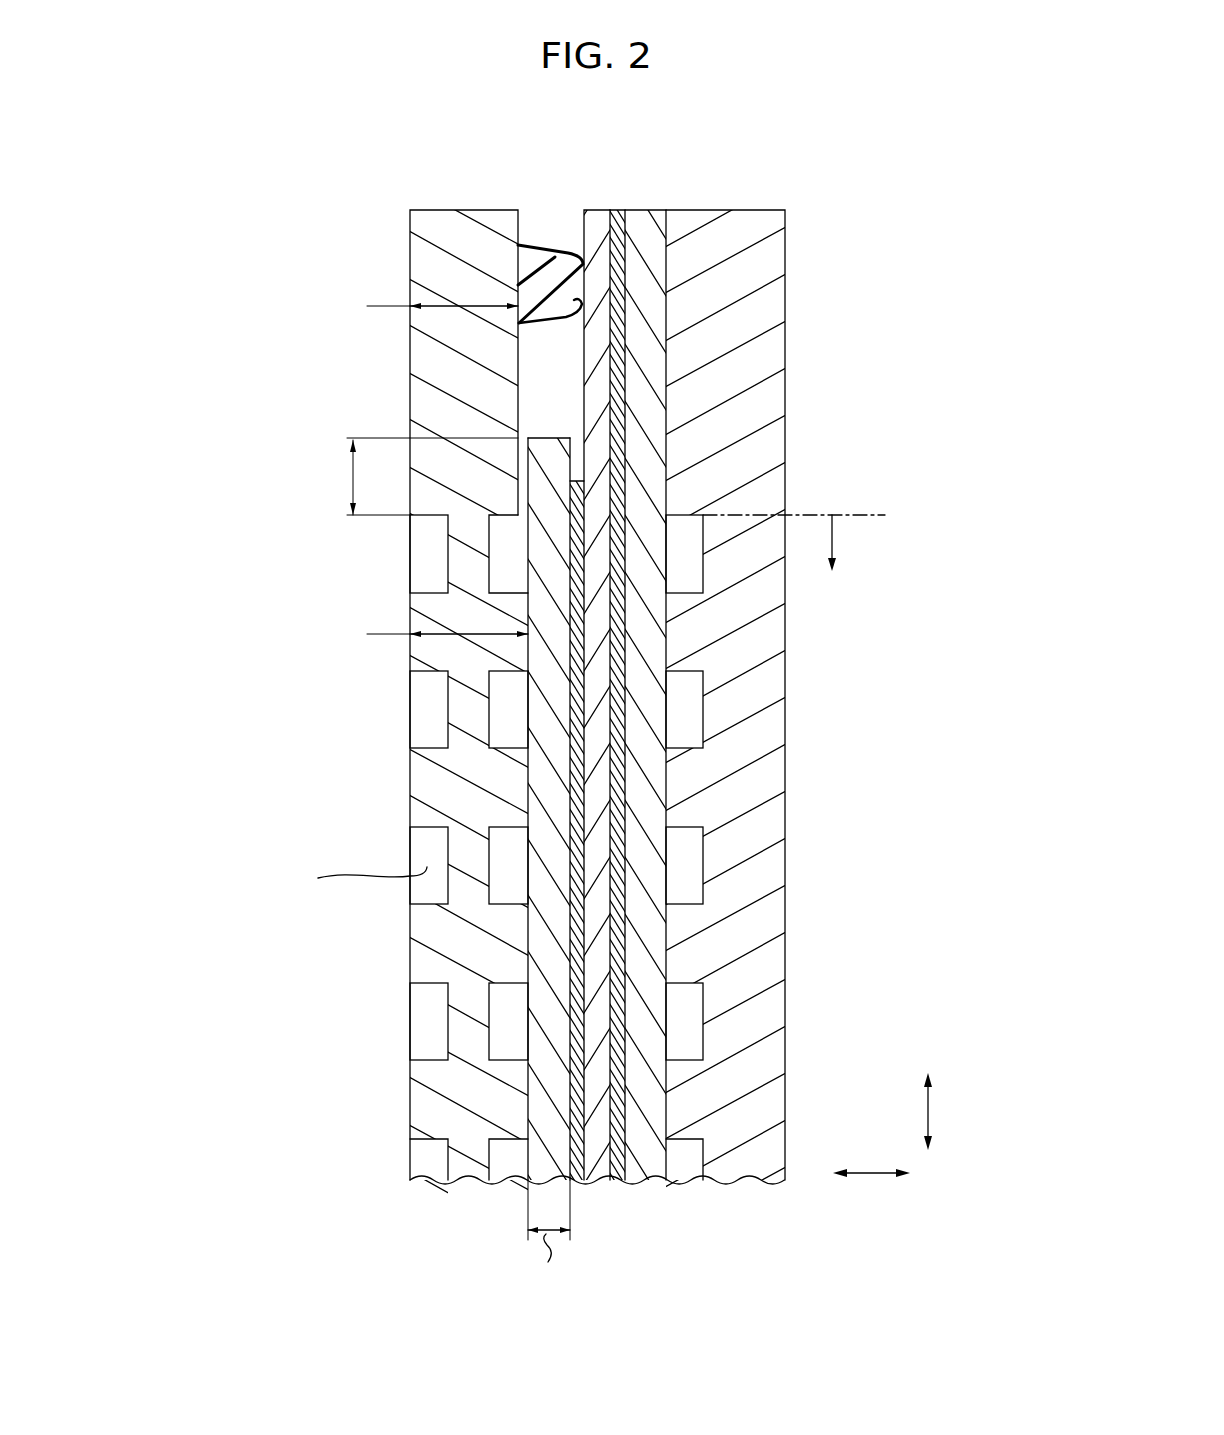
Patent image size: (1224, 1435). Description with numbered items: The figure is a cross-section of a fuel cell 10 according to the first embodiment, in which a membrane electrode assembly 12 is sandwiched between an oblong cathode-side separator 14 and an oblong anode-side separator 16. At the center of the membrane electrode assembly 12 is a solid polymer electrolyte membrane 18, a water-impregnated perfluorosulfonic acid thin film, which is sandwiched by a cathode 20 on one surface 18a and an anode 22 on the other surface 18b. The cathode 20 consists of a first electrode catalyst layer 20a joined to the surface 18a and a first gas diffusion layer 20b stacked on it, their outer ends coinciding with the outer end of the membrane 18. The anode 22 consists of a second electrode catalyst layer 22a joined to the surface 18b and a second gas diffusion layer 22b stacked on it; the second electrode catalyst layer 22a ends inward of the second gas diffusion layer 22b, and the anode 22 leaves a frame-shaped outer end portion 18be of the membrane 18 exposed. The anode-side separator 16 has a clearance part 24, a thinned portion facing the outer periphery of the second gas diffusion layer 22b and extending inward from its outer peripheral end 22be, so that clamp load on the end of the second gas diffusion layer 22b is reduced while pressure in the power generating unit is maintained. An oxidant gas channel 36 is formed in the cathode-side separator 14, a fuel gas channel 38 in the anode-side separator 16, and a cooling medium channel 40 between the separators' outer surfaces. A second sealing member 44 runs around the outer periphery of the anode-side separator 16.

The fuel cell 10 is at (758, 97).
The membrane electrode assembly 12 is at (643, 205).
The cathode-side separator 14 is at (760, 207).
The anode-side separator 16 is at (427, 206).
The solid polymer electrolyte membrane 18 is at (597, 208).
The surface of the solid polymer electrolyte membrane 18a is at (622, 1150).
The another surface of the solid polymer electrolyte membrane 18b is at (568, 1158).
The frame-shaped outer end portion of the solid polymer electrolyte membrane 18be is at (583, 356).
The cathode 20 is at (884, 950).
The first electrode catalyst layer 20a is at (625, 937).
The first gas diffusion layer 20b is at (647, 1004).
The anode 22 is at (311, 950).
The second electrode catalyst layer 22a is at (580, 937).
The second gas diffusion layer 22b is at (543, 1003).
The outer peripheral end of the second gas diffusion layer 22be is at (549, 438).
The clearance part 24 is at (518, 410).
The oxidant gas channel 36 is at (683, 671).
The fuel gas channel 38 is at (508, 671).
The cooling medium channel 40 is at (424, 827).
The second sealing member 44 is at (551, 260).